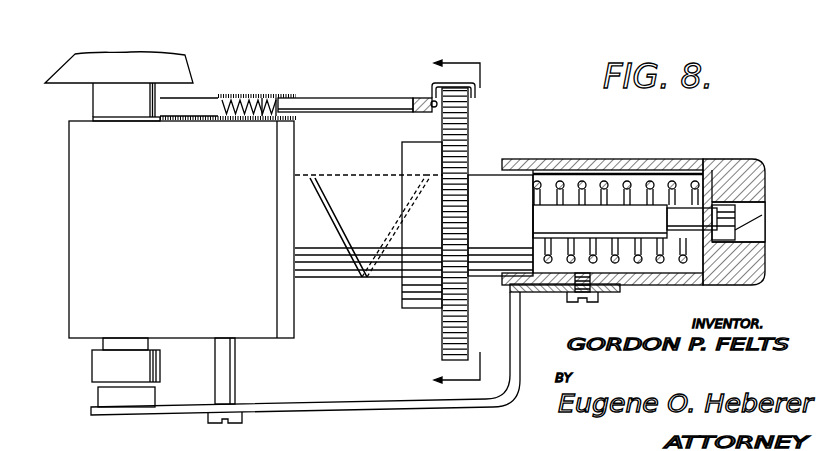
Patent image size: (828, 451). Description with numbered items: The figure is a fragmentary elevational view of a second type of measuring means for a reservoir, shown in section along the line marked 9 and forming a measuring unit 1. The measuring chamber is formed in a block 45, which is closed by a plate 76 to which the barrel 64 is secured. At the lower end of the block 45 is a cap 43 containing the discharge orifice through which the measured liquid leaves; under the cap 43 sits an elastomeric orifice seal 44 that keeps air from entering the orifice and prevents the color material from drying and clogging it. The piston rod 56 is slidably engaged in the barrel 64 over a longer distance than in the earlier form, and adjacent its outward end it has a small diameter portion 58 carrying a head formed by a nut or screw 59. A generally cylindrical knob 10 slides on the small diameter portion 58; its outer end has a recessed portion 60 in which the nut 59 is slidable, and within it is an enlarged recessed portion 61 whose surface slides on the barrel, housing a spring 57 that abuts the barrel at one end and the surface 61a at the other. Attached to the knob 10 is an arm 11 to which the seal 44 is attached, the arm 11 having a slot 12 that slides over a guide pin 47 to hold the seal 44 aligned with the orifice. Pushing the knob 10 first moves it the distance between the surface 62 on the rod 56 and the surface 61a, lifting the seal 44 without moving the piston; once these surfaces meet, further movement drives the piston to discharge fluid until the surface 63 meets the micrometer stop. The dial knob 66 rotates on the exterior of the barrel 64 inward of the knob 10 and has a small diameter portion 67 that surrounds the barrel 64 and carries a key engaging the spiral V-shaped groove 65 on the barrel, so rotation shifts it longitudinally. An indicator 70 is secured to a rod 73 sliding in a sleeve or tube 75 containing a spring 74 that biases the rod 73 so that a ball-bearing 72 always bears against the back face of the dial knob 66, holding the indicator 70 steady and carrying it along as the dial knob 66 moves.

The knob 1 is at (89, 52).
The section line 9- 9 is at (450, 221).
The knob 10 is at (697, 161).
The arm 11 is at (478, 410).
The slot 12 is at (320, 413).
The cap 43 is at (100, 369).
The orifice seal 44 is at (108, 396).
The block 45 is at (78, 221).
The guide pin 47 is at (225, 377).
The piston rod 56 is at (568, 183).
The spring 57 is at (621, 183).
The small diameter portion 58 is at (757, 196).
The nut or screw 59 is at (747, 213).
The recessed portion 60 is at (748, 229).
The enlarged diameter recessed portion 61 is at (665, 176).
The surface 61a is at (728, 165).
The surface 62 is at (606, 290).
The surface 63 is at (497, 159).
The barrel 64 is at (500, 225).
The spirally-directed groove 65 is at (362, 279).
The dial knob 66 is at (469, 332).
The small diameter portion 67 is at (412, 310).
The indicator 70 is at (476, 92).
The ball-bearing 72 is at (433, 106).
The rod 73 is at (336, 99).
The spring 74 is at (266, 96).
The sleeve or tube 75 is at (235, 96).
The plate 76 is at (284, 148).